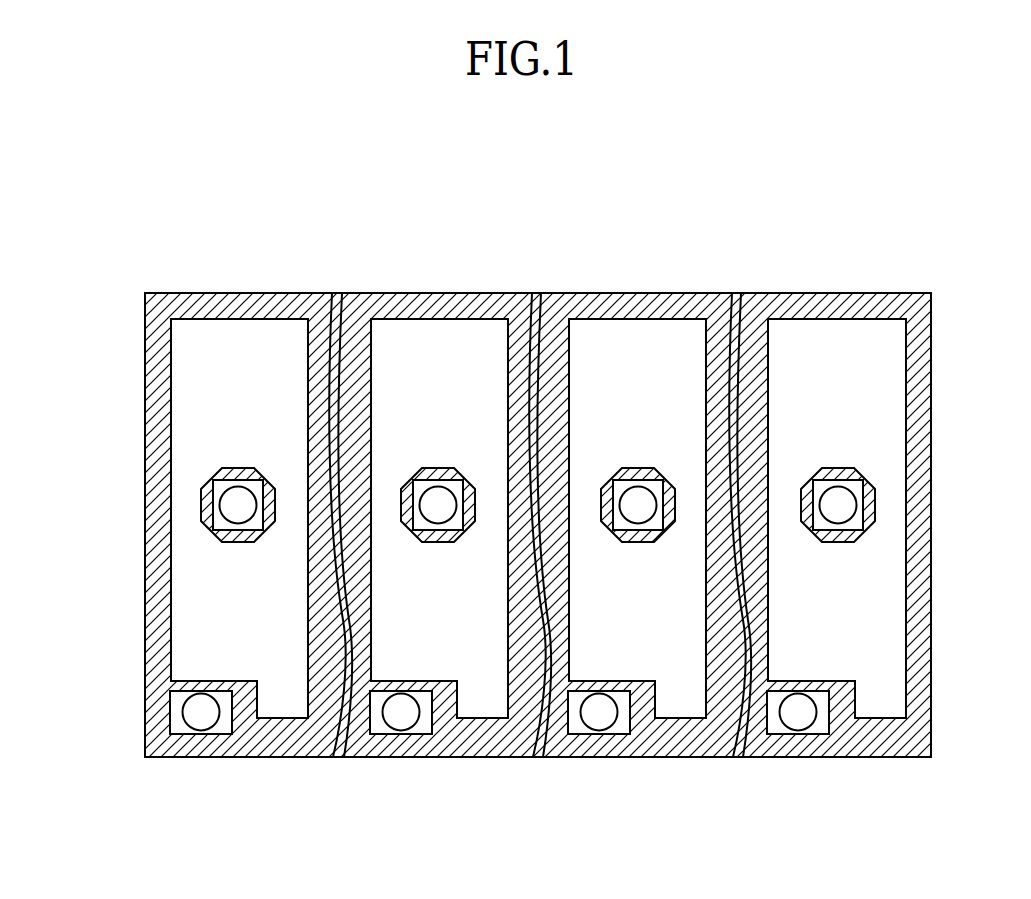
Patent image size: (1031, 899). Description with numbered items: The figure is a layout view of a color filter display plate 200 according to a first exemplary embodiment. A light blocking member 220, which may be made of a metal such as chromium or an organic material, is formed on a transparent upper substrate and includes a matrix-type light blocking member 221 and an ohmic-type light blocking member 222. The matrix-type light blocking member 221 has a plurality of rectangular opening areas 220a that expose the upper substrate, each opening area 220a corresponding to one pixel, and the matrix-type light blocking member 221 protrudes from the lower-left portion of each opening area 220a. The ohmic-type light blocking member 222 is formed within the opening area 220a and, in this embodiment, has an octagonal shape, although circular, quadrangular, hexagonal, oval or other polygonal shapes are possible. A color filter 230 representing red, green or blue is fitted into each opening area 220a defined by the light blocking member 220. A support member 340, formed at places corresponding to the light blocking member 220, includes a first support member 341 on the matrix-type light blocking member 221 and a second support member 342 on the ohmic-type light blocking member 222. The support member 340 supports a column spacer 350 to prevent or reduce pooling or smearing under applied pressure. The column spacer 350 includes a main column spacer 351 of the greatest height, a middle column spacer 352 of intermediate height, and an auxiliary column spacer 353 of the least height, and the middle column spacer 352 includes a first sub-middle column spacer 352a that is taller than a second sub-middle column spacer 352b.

The color filter display plate 200 is at (933, 260).
The light blocking member 220 is at (62, 345).
The opening area 220a is at (307, 658).
The matrix-type light blocking member 221 is at (157, 352).
The ohmic-type light blocking member 222 is at (205, 497).
The color filter 230 is at (203, 348).
The support member 340 is at (135, 607).
The first support member 341 is at (148, 712).
The second support member 342 is at (218, 522).
The column spacer 350 is at (538, 335).
The main column spacer 351 is at (238, 487).
The middle column spacer 352 is at (538, 357).
The first sub-middle column spacer 352a is at (438, 487).
The second sub-middle column spacer 352b is at (638, 487).
The auxiliary column spacer 353 is at (823, 367).